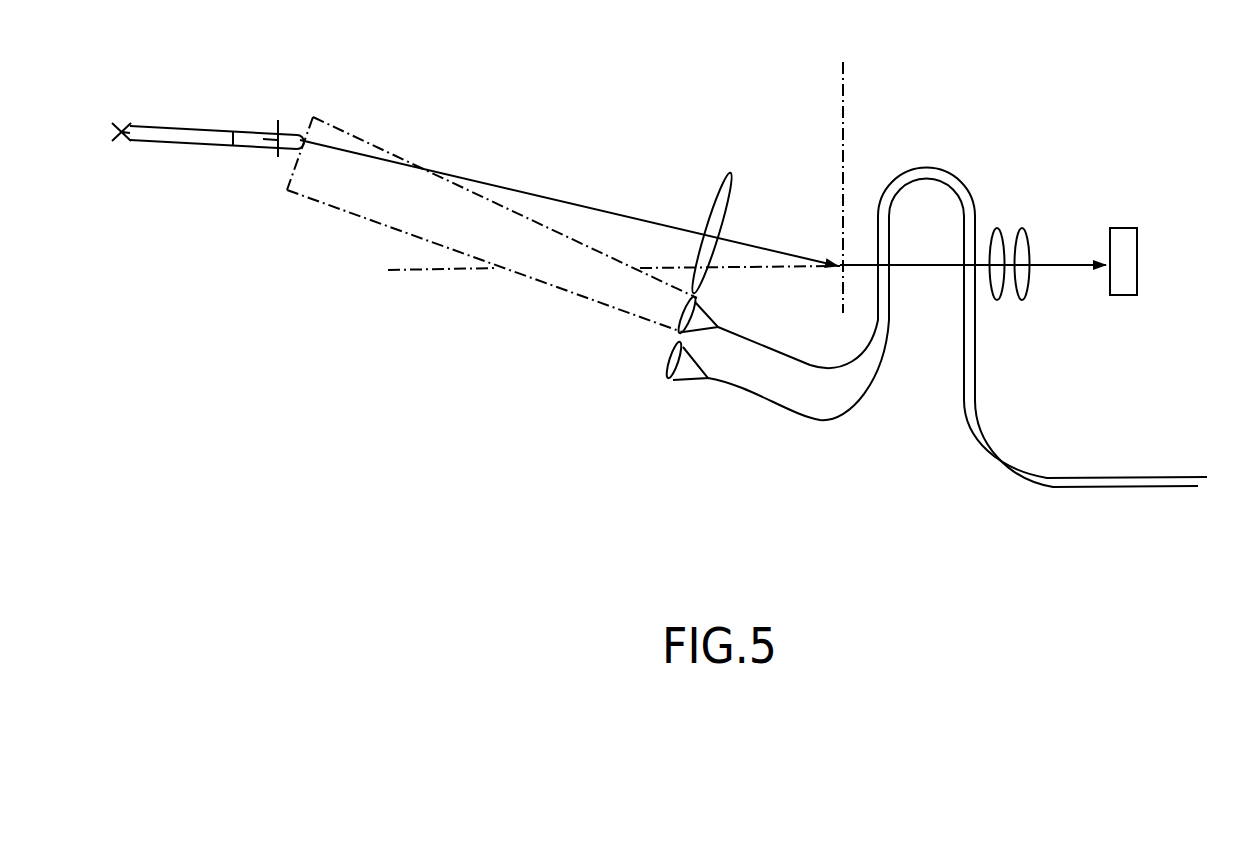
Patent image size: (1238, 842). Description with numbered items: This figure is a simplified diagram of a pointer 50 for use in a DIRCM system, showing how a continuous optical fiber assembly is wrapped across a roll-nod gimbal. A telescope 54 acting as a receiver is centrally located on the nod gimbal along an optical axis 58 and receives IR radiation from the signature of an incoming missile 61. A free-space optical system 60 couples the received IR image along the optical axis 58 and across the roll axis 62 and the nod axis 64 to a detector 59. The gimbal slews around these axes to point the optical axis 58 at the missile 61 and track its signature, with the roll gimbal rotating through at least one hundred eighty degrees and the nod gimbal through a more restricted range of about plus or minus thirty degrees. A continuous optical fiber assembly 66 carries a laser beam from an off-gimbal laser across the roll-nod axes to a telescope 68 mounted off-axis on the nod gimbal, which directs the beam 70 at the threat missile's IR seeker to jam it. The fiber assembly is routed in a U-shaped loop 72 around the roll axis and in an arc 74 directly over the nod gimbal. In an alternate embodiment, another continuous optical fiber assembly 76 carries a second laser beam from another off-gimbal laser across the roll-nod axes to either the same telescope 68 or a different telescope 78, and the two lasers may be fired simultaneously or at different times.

The pointer 50 is at (482, 465).
The telescope 54 is at (727, 172).
The optical axis 58 is at (532, 193).
The detector 59 is at (1125, 228).
The free-space optical system 60 is at (1008, 205).
The incoming missile 61 is at (197, 128).
The roll axis 62 is at (460, 271).
The nod axis 64 is at (843, 130).
The continuous optical fiber assembly 66 is at (992, 433).
The telescope 68 is at (700, 303).
The beam 70 is at (540, 284).
The U-shaped loop 72 is at (928, 168).
The arc 74 is at (849, 415).
The continuous optical fiber assembly 76 is at (978, 433).
The telescope 78 is at (673, 383).